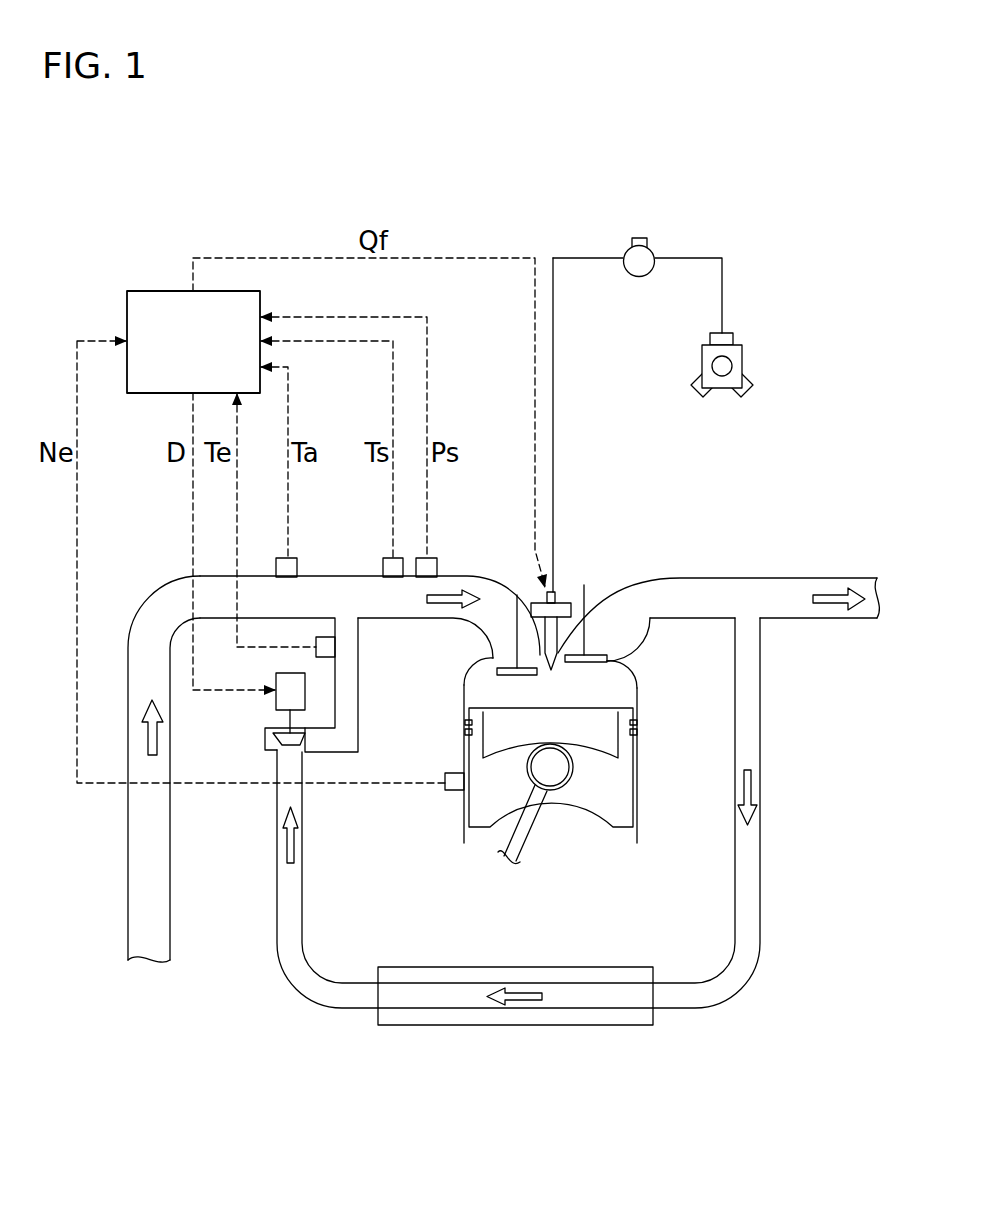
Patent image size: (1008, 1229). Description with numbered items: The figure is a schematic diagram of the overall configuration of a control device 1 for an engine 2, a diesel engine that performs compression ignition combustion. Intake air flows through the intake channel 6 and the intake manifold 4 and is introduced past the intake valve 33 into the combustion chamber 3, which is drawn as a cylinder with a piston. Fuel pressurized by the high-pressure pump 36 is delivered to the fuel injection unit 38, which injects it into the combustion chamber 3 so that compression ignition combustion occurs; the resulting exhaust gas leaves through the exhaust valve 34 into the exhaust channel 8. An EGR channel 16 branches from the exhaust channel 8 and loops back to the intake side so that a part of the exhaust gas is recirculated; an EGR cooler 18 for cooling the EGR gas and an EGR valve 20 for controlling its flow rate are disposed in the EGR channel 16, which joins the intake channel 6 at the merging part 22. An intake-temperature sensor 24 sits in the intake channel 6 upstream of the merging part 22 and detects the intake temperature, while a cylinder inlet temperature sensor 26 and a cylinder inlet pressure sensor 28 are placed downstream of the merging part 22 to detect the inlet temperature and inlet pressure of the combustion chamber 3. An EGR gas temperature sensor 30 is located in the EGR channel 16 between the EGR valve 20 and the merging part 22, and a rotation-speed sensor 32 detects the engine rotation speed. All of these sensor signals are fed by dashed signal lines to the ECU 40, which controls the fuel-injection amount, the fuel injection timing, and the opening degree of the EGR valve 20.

The control device 1 is at (742, 234).
The engine 2 is at (604, 536).
The combustion chamber 3 is at (613, 688).
The intake manifold 4 is at (370, 624).
The intake channel 6 is at (128, 674).
The exhaust channel 8 is at (802, 577).
The EGR channel 16 is at (675, 1010).
The EGR cooler 18 is at (620, 967).
The EGR valve 20 is at (280, 752).
The merging part 22 is at (349, 605).
The intake-temperature sensor 24 is at (288, 557).
The cylinder inlet temperature sensor 26 is at (392, 557).
The cylinder inlet pressure sensor 28 is at (428, 557).
The EGR gas temperature sensor 30 is at (316, 652).
The rotation-speed sensor 32 is at (452, 773).
The intake valve 33 is at (513, 603).
The exhaust valve 34 is at (587, 603).
The high-pressure pump 36 is at (745, 358).
The fuel injection unit 38 is at (558, 597).
The ECU 40 is at (148, 291).